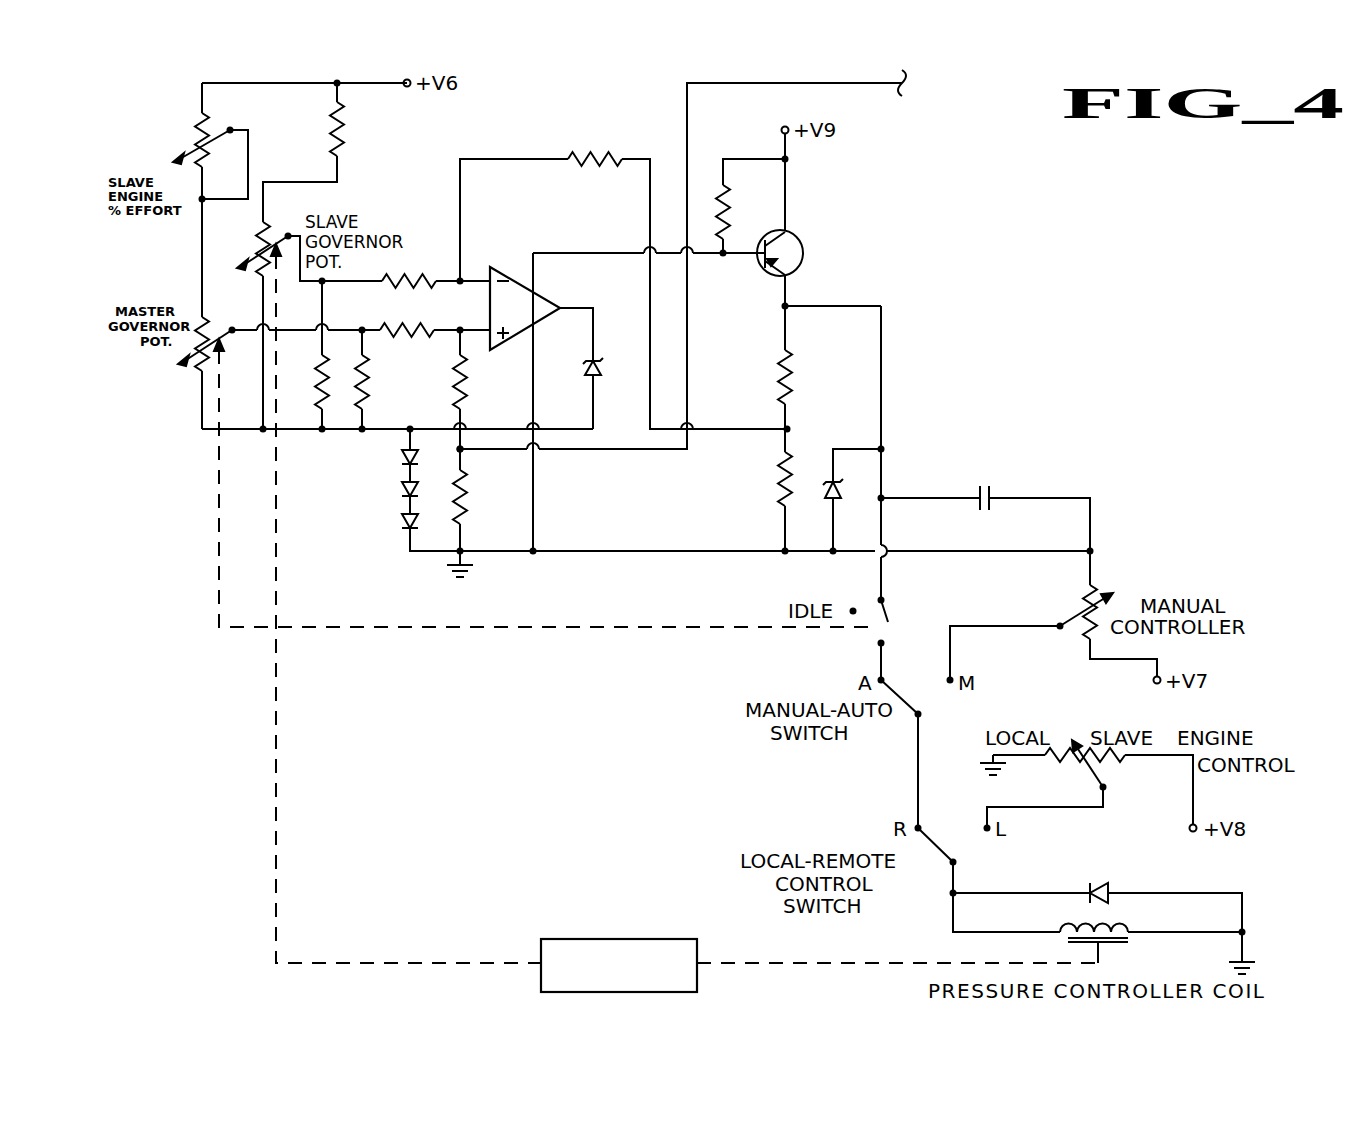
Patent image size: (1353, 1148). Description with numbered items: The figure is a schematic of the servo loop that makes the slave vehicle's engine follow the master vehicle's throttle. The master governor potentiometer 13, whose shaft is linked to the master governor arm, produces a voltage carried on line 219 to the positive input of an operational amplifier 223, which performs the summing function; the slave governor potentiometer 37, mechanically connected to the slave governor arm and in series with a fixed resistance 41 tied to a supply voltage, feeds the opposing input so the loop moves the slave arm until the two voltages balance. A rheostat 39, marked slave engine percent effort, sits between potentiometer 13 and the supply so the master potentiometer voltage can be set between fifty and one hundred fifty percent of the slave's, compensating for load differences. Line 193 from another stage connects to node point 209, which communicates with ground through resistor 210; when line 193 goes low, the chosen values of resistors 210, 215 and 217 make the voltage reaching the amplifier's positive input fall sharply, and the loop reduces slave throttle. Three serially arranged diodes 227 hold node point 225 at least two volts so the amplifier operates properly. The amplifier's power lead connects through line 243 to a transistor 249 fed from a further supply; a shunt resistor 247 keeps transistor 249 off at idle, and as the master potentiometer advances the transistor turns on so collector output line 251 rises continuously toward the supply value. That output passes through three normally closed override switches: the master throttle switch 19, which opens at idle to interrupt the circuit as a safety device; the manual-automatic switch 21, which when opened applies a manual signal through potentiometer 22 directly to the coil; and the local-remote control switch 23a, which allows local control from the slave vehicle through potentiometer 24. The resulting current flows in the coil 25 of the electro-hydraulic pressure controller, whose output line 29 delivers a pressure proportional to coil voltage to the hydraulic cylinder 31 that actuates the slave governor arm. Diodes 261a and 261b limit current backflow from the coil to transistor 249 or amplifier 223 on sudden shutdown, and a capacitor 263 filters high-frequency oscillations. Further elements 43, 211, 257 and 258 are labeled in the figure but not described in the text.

The master governor potentiometer 13 is at (190, 360).
The master throttle switch 19 is at (892, 622).
The manual-automatic switch 21 is at (914, 709).
The potentiometer 22 is at (1080, 595).
The local-remote control switch 23a is at (953, 864).
The potentiometer 24 is at (1124, 774).
The coil 25 is at (1135, 920).
The output line 29 is at (839, 961).
The hydraulic cylinder 31 is at (585, 939).
The slave governor potentiometer 37 is at (248, 250).
The rheostat 39 is at (197, 127).
The fixed resistance 41 is at (345, 127).
The supply conductor 43 is at (349, 85).
The line 193 is at (754, 85).
The node point 209 is at (462, 451).
The resistor 210 is at (468, 508).
The resistor 211 is at (362, 330).
The resistor 215 is at (406, 342).
The resistor 217 is at (454, 379).
The line 219 is at (239, 328).
The operational amplifier 223 is at (488, 301).
The node point 225 is at (405, 432).
The diodes 227 is at (398, 524).
The line 243 is at (536, 253).
The shunt resistor 247 is at (729, 210).
The transistor 249 is at (800, 236).
The collector output line 251 is at (788, 292).
The input conductor 257 is at (462, 280).
The zener diode 258 is at (577, 308).
The diode 261a is at (1120, 884).
The diode 261b is at (823, 478).
The capacitor 263 is at (990, 498).